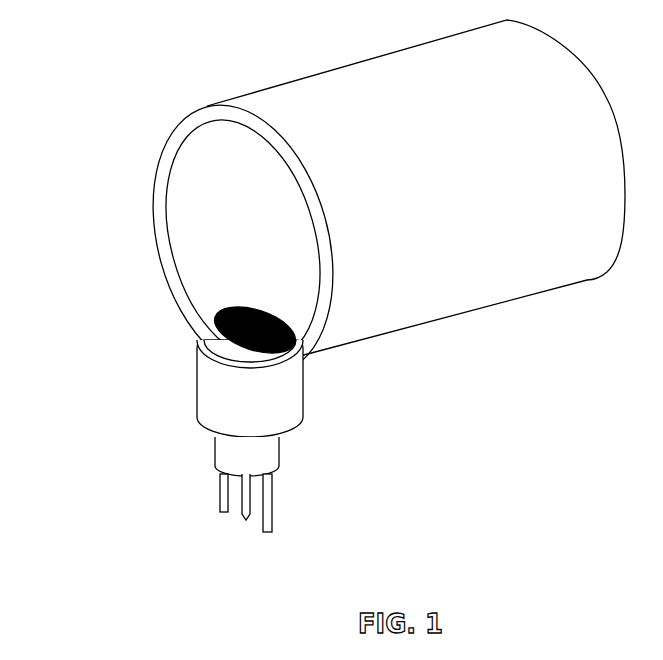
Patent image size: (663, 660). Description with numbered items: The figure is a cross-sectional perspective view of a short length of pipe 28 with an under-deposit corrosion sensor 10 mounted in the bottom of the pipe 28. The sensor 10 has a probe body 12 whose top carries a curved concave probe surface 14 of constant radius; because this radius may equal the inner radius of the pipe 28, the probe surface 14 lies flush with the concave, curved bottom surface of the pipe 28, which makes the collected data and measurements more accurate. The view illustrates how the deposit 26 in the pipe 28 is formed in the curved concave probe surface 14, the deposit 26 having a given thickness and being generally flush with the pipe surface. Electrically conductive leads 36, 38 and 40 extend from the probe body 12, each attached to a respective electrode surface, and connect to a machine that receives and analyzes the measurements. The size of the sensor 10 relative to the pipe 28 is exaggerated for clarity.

The under-deposit corrosion sensor 10 is at (321, 310).
The probe body 12 is at (262, 412).
The curved concave probe surface 14 is at (226, 355).
The deposit 26 is at (241, 326).
The pipe 28 is at (452, 200).
The electrically conductive lead 36 is at (272, 510).
The electrically conductive lead 38 is at (243, 512).
The electrically conductive lead 40 is at (222, 493).